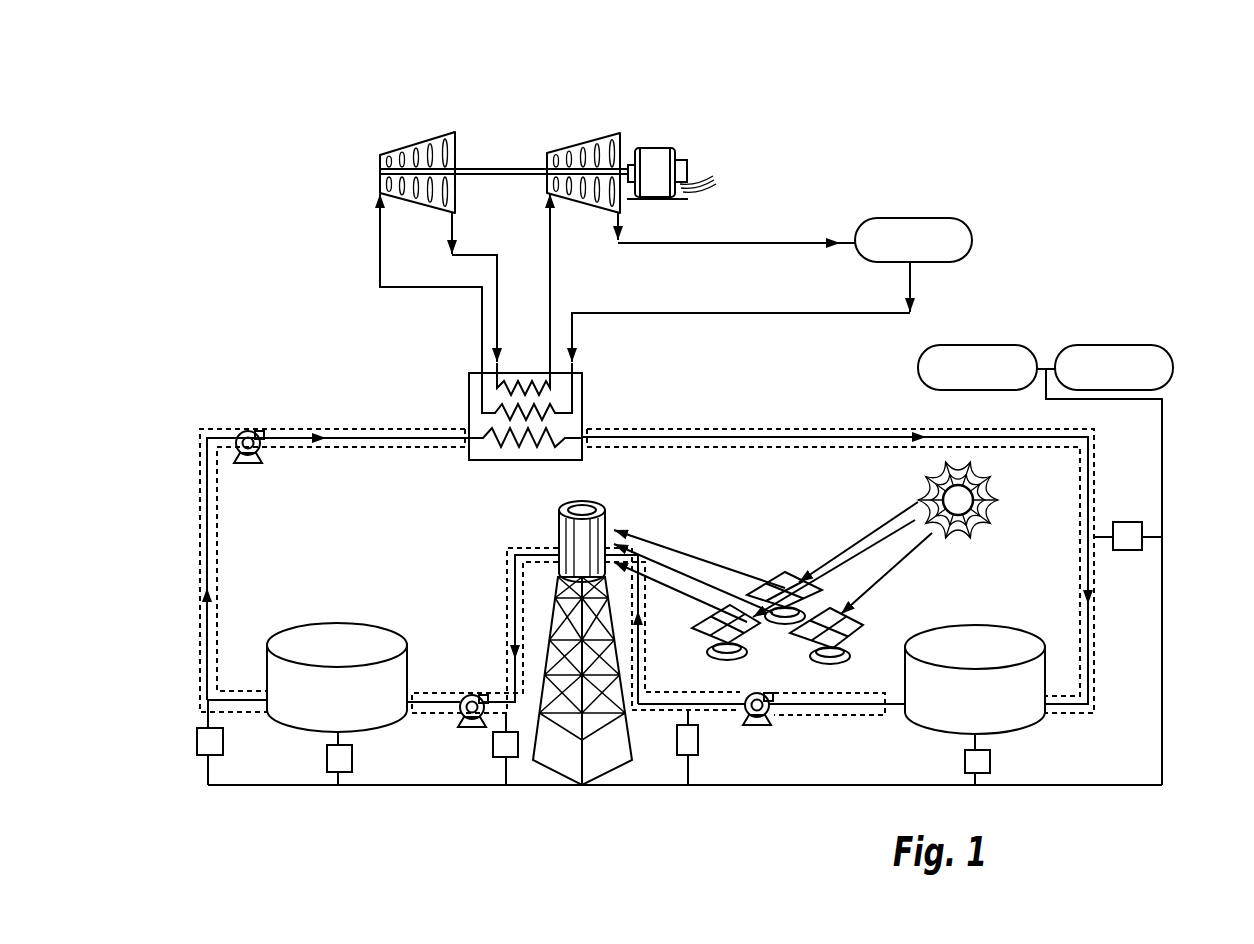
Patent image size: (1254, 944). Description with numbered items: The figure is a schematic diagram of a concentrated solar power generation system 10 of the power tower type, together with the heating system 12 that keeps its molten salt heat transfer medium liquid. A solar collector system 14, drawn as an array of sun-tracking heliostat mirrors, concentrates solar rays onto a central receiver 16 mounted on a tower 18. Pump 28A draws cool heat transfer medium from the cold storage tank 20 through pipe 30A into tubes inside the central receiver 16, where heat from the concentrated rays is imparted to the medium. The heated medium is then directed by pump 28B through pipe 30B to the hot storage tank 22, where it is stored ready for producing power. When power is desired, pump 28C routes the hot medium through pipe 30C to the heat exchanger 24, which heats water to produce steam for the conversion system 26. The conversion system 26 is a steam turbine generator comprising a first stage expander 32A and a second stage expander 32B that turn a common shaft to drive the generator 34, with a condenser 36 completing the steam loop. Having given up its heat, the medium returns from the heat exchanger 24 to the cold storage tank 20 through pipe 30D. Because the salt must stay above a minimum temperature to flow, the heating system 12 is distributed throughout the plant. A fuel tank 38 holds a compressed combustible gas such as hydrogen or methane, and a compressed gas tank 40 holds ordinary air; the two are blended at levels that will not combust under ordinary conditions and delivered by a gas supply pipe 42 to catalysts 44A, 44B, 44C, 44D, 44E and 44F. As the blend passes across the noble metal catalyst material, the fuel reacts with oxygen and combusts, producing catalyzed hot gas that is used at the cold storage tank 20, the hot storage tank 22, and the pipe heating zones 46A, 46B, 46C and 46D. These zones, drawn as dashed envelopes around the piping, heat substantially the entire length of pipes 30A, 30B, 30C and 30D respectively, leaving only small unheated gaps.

The concentrated solar power generation system 10 is at (795, 175).
The heating system 12 is at (1169, 398).
The solar collector system 14 is at (778, 560).
The central receiver 16 is at (572, 533).
The tower 18 is at (553, 775).
The cold storage tank 20 is at (962, 632).
The hot storage tank 22 is at (327, 633).
The heat exchanger 24 is at (582, 402).
The conversion system 26 is at (491, 148).
The pump 28A is at (752, 722).
The pump 28B is at (463, 722).
The pump 28C is at (247, 430).
The pipe 30A is at (825, 705).
The pipe 30B is at (506, 580).
The pipe 30C is at (410, 435).
The pipe 30D is at (797, 437).
The first stage expander 32A is at (394, 150).
The second stage expander 32B is at (596, 148).
The generator 34 is at (653, 148).
The condenser 36 is at (898, 228).
The fuel tank 38 is at (1095, 345).
The compressed gas tank 40 is at (918, 366).
The gas supply pipe 42 is at (1137, 787).
The catalyst 44A is at (677, 740).
The catalyst 44B is at (493, 755).
The catalyst 44C is at (223, 743).
The catalyst 44D is at (1128, 522).
The catalyst 44E is at (990, 758).
The catalyst 44F is at (327, 760).
The pipe heating zone 46A is at (702, 690).
The pipe heating zone 46B is at (505, 613).
The pipe heating zone 46C is at (217, 643).
The pipe heating zone 46D is at (1077, 502).